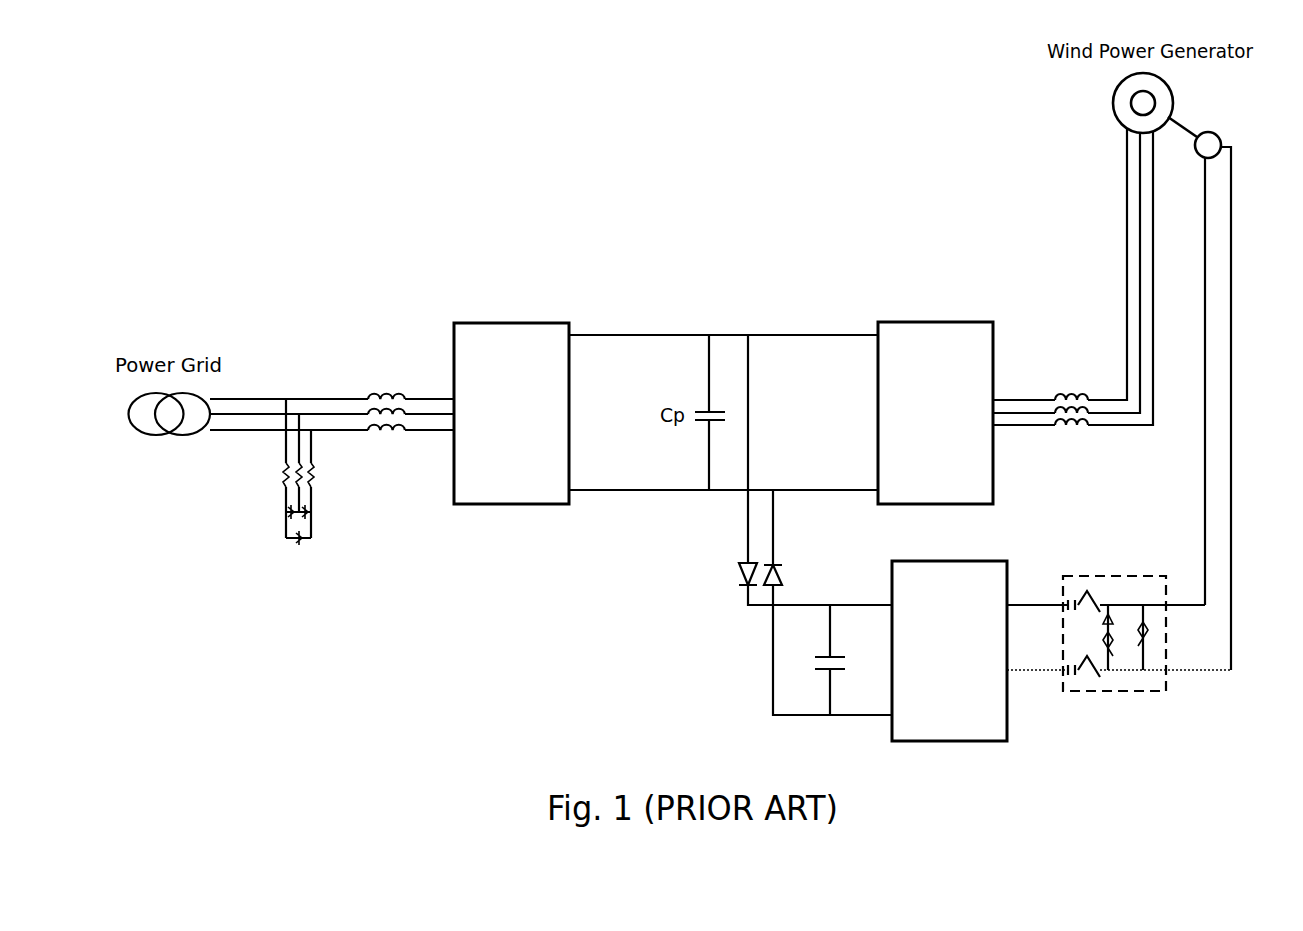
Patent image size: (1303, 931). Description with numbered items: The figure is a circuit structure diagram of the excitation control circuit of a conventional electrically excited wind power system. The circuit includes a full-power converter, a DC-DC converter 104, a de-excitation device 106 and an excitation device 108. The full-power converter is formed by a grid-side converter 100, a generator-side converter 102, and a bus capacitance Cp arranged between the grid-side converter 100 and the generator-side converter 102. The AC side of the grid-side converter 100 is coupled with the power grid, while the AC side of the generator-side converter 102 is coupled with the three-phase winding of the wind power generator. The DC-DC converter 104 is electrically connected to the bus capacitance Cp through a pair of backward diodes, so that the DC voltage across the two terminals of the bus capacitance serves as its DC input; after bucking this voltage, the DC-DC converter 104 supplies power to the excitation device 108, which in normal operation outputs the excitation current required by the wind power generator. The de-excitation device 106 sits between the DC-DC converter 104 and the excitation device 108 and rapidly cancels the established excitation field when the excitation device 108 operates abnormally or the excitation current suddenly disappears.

The grid-side converter 100 is at (511, 322).
The generator-side converter 102 is at (937, 322).
The DC-DC converter 104 is at (942, 743).
The de-excitation device 106 is at (1117, 574).
The excitation device 108 is at (1218, 130).